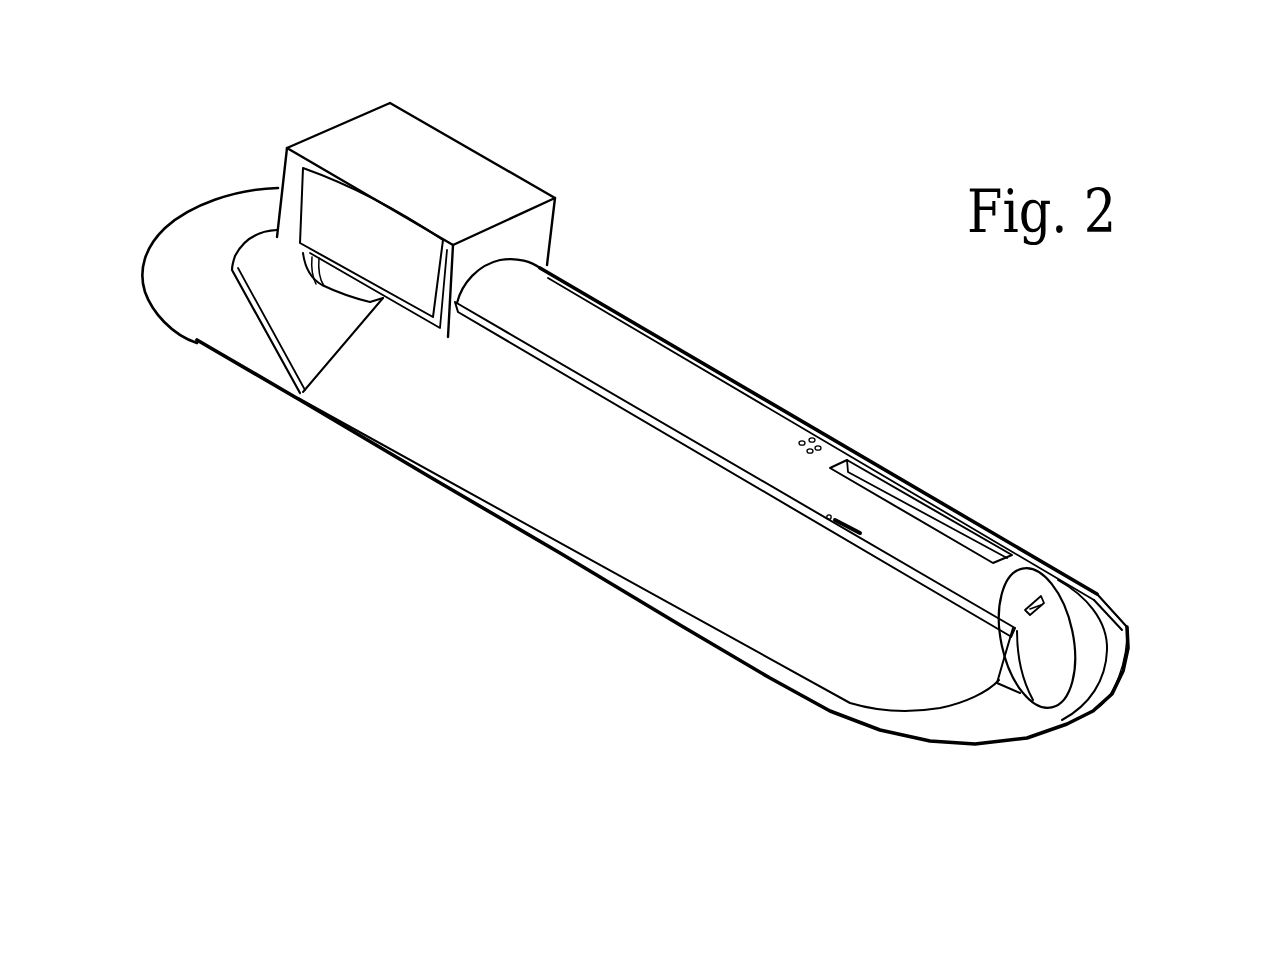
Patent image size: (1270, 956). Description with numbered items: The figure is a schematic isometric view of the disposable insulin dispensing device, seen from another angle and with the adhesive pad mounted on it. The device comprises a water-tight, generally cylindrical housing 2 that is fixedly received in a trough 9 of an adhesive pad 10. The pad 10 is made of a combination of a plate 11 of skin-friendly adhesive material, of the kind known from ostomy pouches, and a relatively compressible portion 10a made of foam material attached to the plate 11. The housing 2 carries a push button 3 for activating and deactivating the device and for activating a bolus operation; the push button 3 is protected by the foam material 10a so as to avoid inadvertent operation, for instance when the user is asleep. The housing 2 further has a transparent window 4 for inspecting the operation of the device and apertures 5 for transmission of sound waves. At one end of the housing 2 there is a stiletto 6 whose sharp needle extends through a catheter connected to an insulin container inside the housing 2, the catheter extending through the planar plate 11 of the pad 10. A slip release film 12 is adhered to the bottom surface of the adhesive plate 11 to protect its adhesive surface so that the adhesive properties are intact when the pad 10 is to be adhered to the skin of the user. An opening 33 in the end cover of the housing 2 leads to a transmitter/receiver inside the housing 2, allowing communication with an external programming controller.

The housing 2 is at (723, 233).
The push button 3 is at (860, 812).
The transparent window 4 is at (1022, 410).
The apertures 5 is at (885, 316).
The stiletto 6 is at (524, 76).
The trough 9 is at (1233, 599).
The adhesive pad 10 is at (688, 703).
The compressible portion 10a is at (521, 617).
The plate 11 is at (327, 607).
The slip release film 12 is at (235, 467).
The opening 33 is at (1108, 797).